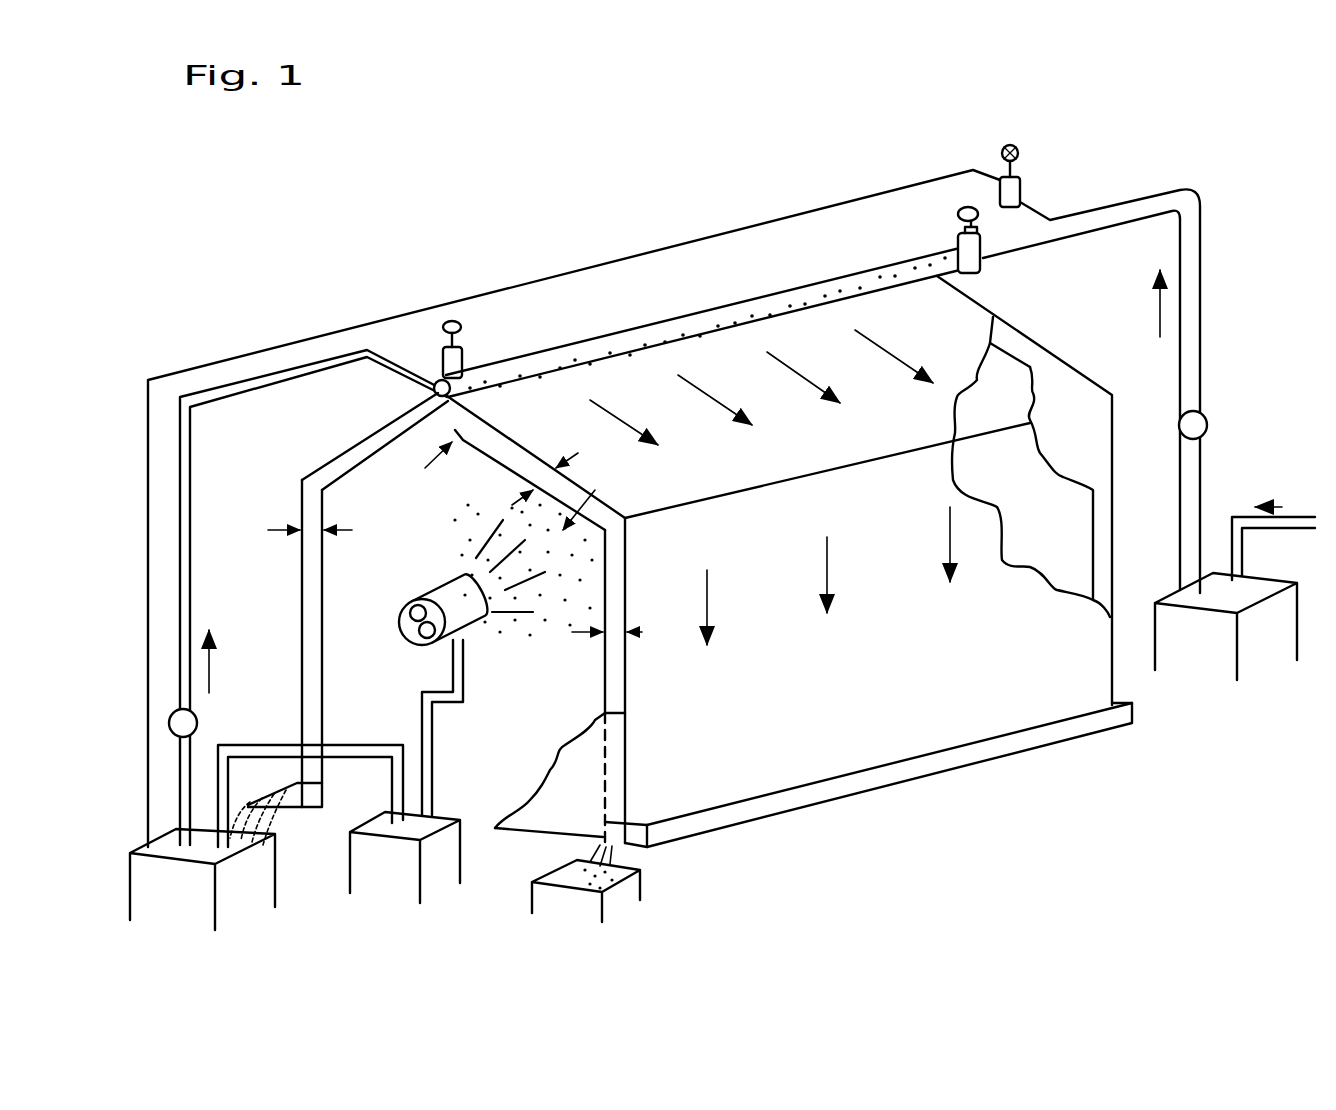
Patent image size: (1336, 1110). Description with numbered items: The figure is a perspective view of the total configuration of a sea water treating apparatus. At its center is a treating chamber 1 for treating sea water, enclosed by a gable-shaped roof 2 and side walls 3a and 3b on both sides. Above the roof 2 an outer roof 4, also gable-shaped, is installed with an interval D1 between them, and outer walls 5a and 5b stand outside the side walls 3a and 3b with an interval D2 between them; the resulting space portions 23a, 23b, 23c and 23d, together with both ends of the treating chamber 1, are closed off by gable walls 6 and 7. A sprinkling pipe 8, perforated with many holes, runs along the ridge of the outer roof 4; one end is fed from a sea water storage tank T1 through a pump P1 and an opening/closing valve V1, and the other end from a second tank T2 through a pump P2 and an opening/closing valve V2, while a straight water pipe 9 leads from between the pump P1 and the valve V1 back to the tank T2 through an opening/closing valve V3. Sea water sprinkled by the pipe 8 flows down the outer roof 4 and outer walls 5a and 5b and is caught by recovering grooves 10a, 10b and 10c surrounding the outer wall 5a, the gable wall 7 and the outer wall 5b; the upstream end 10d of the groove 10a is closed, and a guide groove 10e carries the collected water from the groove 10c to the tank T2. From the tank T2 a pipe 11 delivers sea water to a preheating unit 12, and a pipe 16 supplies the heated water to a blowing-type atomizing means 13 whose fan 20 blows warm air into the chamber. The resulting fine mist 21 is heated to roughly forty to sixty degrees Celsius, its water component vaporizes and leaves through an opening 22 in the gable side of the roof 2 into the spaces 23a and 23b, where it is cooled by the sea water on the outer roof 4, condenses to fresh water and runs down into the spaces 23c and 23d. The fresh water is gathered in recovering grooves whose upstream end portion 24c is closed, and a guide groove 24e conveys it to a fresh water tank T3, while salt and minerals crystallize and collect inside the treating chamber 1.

The treating chamber 1 is at (513, 697).
The roof 2 is at (1010, 377).
The side wall 3a is at (312, 636).
The side wall 3b is at (615, 575).
The outer roof 4 is at (577, 332).
The outer wall 5a is at (301, 705).
The outer wall 5b is at (748, 782).
The gable wall 6 is at (522, 800).
The gable wall 7 is at (1092, 397).
The sprinkling pipe 8 is at (805, 285).
The straight water pipe 9 is at (560, 273).
The recovering groove 10a is at (900, 775).
The recovering groove 10b is at (1122, 700).
The recovering groove 10c is at (300, 777).
The upstream end 10d is at (648, 838).
The guide groove 10e is at (283, 808).
The pipe 11 is at (378, 745).
The preheating unit 12 is at (432, 875).
The atomizing means 13 is at (443, 592).
The pipe 16 is at (425, 695).
The fan 20 is at (408, 608).
The fine mist 21 is at (596, 492).
The opening 22 is at (427, 465).
The space portion 23a is at (385, 442).
The space portion 23b is at (530, 455).
The space portion 23c is at (300, 564).
The space portion 23d is at (622, 670).
The end portion 24c is at (332, 790).
The guide groove 24e is at (585, 850).
The interval D1 is at (566, 480).
The interval D2 is at (461, 564).
The pump P1 is at (1206, 418).
The pump P2 is at (170, 718).
The sea water storage tank T1 is at (1172, 592).
The sea water storage tank T2 is at (145, 850).
The fresh water tank T3 is at (530, 892).
The opening/closing valve V1 is at (984, 266).
The opening/closing valve V2 is at (440, 348).
The opening/closing valve V3 is at (1021, 180).